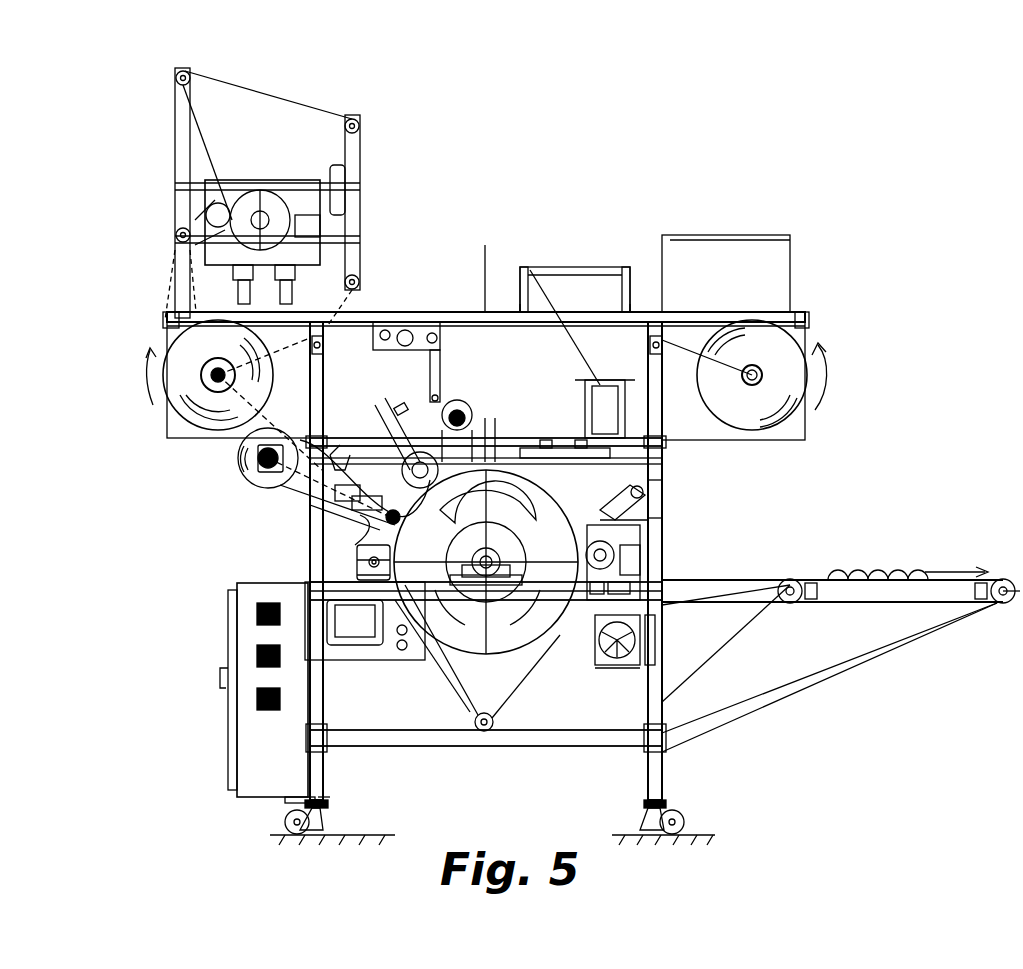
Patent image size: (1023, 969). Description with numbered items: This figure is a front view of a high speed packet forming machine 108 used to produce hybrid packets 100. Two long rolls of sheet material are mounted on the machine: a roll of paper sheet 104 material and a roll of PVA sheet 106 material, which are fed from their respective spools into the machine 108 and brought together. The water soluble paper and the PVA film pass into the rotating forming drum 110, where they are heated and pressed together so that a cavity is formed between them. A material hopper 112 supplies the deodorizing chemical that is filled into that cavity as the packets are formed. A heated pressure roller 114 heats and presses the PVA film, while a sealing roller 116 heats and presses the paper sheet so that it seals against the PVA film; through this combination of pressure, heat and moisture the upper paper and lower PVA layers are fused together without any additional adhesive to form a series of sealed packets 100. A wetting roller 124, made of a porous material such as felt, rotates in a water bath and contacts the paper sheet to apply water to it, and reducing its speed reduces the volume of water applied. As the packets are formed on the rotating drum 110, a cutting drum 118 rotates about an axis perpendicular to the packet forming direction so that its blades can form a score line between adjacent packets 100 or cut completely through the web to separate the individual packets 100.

The packets 100 is at (900, 575).
The roll of paper sheet 104 is at (185, 343).
The roll of PVA sheet 106 is at (795, 345).
The high speed packet forming machine 108 is at (655, 472).
The rotating forming drum 110 is at (395, 537).
The material hopper 112 is at (576, 290).
The heated pressure roller 114 is at (630, 540).
The sealing roller 116 is at (430, 450).
The cutting drum 118 is at (360, 566).
The wetting roller 124 is at (455, 400).